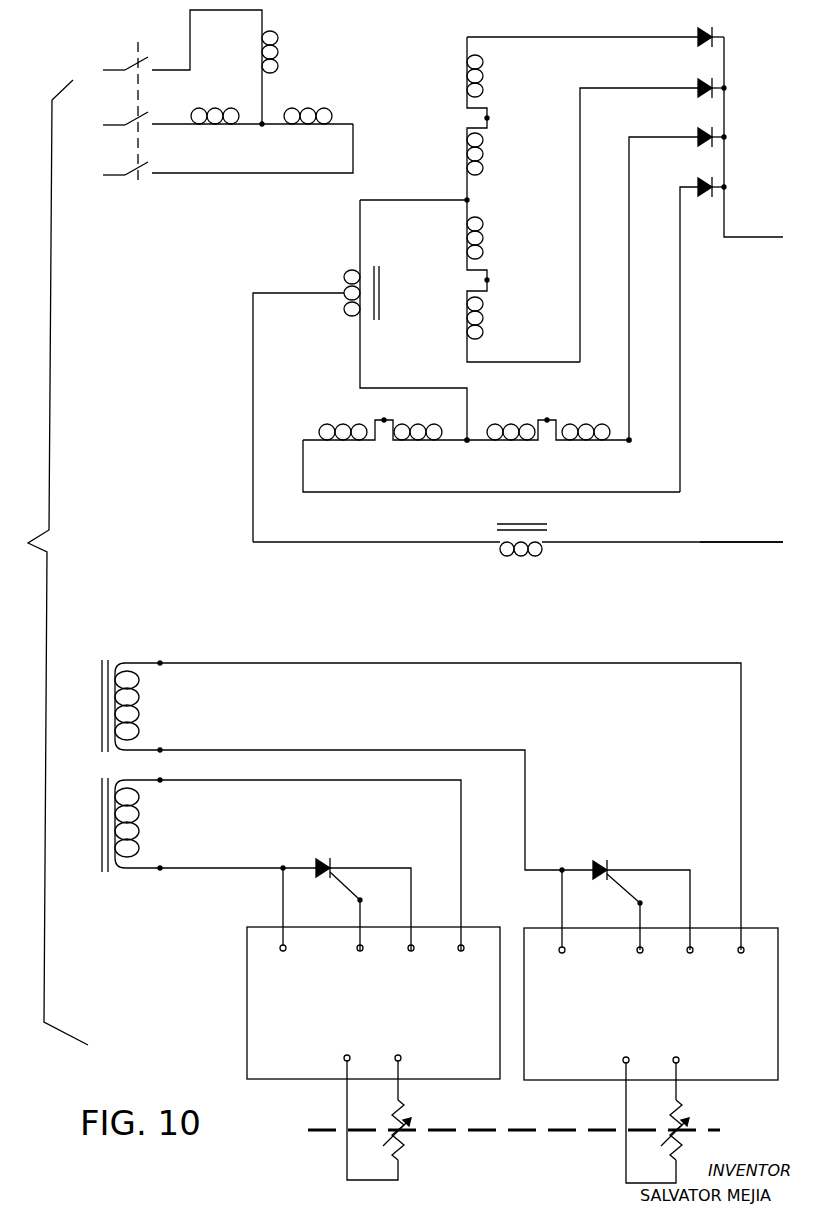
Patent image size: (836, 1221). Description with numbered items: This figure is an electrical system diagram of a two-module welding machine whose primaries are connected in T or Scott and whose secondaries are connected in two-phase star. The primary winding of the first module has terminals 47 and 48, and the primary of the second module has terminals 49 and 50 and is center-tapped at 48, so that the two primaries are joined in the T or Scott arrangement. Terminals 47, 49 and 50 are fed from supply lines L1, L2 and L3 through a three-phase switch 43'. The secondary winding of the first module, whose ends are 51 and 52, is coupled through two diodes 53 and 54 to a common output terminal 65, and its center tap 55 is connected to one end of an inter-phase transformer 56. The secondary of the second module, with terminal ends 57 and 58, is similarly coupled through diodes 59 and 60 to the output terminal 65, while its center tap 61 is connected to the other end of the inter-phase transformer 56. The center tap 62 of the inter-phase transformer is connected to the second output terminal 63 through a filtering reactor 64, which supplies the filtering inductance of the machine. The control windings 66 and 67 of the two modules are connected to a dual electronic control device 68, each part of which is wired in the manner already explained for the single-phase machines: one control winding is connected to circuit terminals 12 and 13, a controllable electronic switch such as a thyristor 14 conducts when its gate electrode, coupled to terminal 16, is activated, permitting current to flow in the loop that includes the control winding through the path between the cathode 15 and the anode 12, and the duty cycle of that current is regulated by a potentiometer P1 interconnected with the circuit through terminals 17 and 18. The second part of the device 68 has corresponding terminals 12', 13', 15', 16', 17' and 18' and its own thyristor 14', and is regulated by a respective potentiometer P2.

The three-phase switch 43' is at (137, 102).
The primary winding terminal 47 is at (276, 41).
The primary winding terminal and center tap 48 is at (275, 100).
The second primary terminal 49 is at (212, 114).
The second primary terminal 50 is at (310, 114).
The secondary winding end 51 is at (463, 115).
The secondary winding end 52 is at (507, 283).
The diode 53 is at (595, 32).
The diode 54 is at (652, 214).
The center tap 55 is at (428, 202).
The inter-phase transformer 56 is at (391, 293).
The secondary terminal end 57 is at (489, 454).
The secondary terminal end 58 is at (550, 441).
The diode 59 is at (676, 278).
The diode 60 is at (692, 329).
The center tap 61 is at (465, 451).
The inter-phase transformer center tap 62 is at (360, 371).
The second output terminal 63 is at (741, 559).
The filtering reactor 64 is at (518, 552).
The common output terminal 65 is at (752, 151).
The control winding 66 is at (404, 805).
The control winding 67 is at (264, 864).
The dual electronic control device 68 is at (533, 1082).
The silicon controlled rectifier 14 is at (615, 892).
The silicon controlled rectifier 14' is at (335, 892).
The circuit terminal 12 is at (563, 924).
The terminal 12' is at (287, 923).
The circuit terminal 13 is at (741, 963).
The terminal 13' is at (462, 962).
The cathode 15 is at (690, 963).
The terminal 15' is at (412, 962).
The gate terminal 16 is at (640, 963).
The terminal 16' is at (362, 962).
The potentiometer terminal 17 is at (676, 1067).
The terminal 17' is at (400, 1066).
The potentiometer terminal 18 is at (645, 1109).
The terminal 18' is at (366, 1106).
The supply line L1 is at (111, 69).
The supply line L2 is at (111, 123).
The supply line L3 is at (111, 173).
The potentiometer P1 is at (684, 1123).
The potentiometer P2 is at (406, 1123).